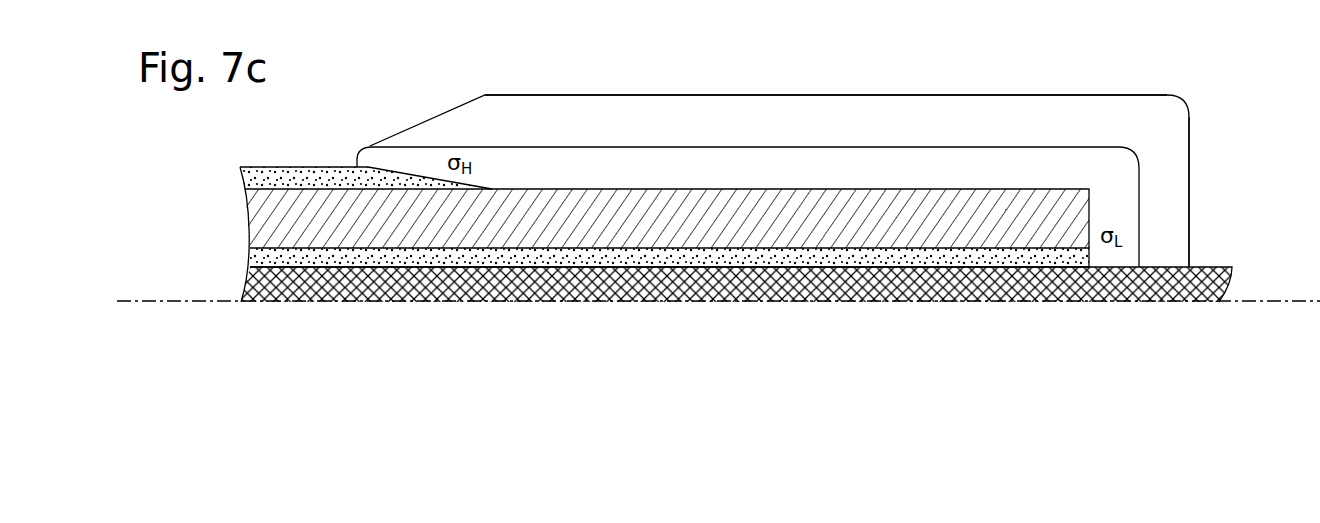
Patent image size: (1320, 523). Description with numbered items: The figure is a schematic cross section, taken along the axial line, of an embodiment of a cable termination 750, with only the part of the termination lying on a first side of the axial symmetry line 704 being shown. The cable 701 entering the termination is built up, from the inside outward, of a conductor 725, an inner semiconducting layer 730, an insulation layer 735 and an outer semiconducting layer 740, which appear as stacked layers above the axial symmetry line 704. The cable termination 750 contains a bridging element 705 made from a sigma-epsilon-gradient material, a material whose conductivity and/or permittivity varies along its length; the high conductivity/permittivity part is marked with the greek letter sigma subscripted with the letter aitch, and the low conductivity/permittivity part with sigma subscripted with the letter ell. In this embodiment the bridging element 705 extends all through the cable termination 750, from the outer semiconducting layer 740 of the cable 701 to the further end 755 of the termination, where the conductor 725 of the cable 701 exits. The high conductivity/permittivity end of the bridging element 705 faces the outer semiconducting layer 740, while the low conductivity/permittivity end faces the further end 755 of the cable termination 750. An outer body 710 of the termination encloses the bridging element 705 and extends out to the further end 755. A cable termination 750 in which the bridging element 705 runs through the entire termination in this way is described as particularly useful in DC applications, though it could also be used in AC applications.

The cable 701 is at (303, 167).
The axial symmetry line 704 is at (1305, 301).
The bridging element 705 is at (748, 207).
The higher conductivity region 710 is at (779, 181).
The conductor 725 is at (243, 293).
The inner semiconducting layer 730 is at (249, 257).
The insulation layer 735 is at (250, 218).
The outer semiconducting layer 740 is at (240, 176).
The cable termination 750 is at (1052, 95).
The further end of the cable termination 755 is at (1197, 229).